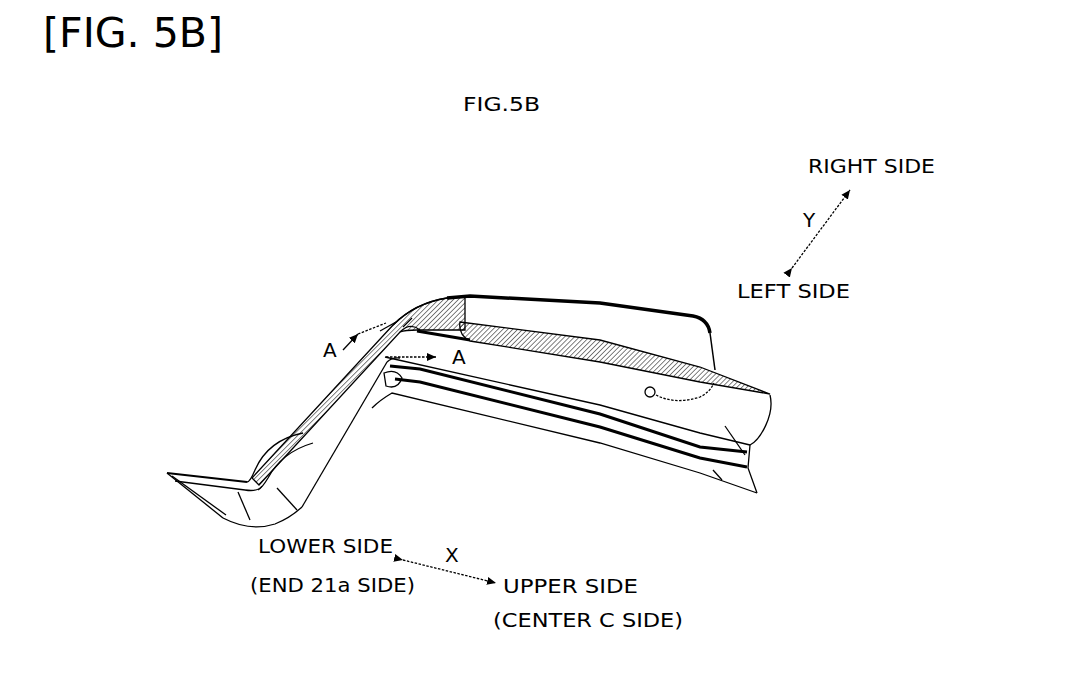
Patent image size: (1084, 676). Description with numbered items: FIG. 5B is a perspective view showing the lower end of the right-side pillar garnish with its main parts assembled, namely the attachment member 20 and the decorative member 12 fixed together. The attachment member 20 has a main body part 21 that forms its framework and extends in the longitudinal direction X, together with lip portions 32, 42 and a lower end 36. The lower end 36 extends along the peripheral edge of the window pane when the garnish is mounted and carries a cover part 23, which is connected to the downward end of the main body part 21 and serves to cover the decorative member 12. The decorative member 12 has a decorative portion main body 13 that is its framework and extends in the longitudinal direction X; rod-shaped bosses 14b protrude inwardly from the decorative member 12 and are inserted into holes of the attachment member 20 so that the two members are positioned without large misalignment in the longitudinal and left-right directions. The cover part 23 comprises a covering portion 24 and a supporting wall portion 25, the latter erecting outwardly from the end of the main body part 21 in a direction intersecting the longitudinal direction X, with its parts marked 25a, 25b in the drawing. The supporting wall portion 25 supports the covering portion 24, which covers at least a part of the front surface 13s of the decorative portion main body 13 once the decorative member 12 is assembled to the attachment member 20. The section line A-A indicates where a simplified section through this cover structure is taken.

The attachment member 20 is at (502, 242).
The cover part 23 is at (336, 262).
The covering portion 24 is at (396, 327).
The supporting wall portion 25 is at (437, 300).
The first wall of rail portion 25a is at (385, 324).
The second wall of rail portion 25b is at (407, 322).
The lip portion 32 is at (563, 304).
The boss 14b is at (714, 383).
The lower end 36 is at (286, 407).
The lip portion 42 is at (460, 404).
The main body part 21 is at (499, 398).
The decorative member 12 is at (600, 428).
The decorative portion main body 13 is at (647, 425).
The front surface of the decorative portion main body 13s is at (725, 426).